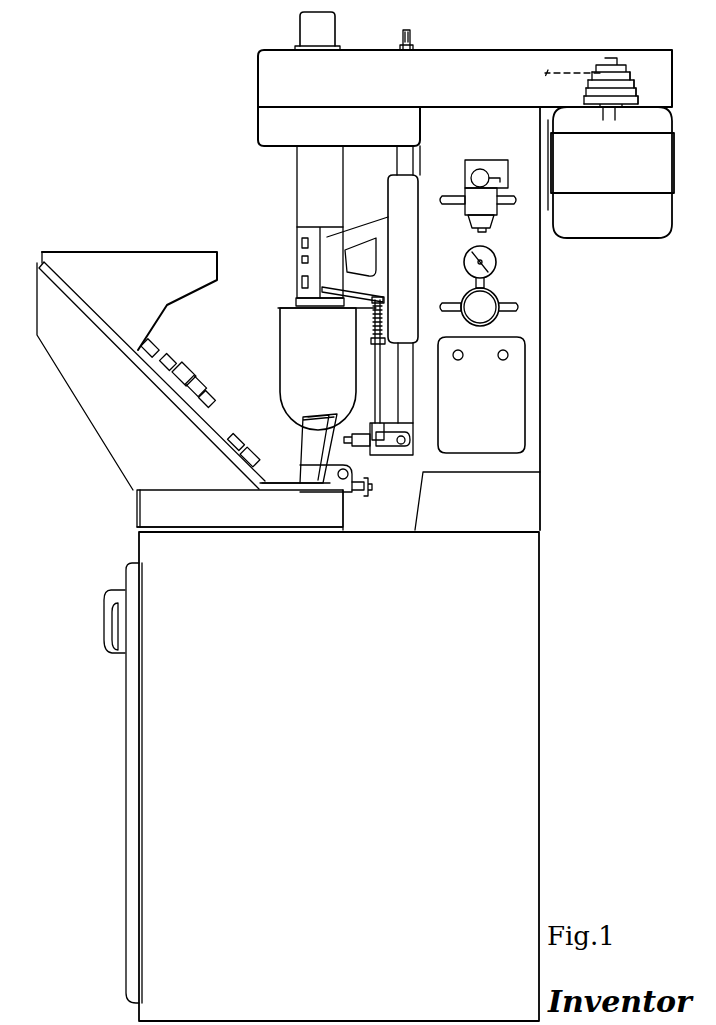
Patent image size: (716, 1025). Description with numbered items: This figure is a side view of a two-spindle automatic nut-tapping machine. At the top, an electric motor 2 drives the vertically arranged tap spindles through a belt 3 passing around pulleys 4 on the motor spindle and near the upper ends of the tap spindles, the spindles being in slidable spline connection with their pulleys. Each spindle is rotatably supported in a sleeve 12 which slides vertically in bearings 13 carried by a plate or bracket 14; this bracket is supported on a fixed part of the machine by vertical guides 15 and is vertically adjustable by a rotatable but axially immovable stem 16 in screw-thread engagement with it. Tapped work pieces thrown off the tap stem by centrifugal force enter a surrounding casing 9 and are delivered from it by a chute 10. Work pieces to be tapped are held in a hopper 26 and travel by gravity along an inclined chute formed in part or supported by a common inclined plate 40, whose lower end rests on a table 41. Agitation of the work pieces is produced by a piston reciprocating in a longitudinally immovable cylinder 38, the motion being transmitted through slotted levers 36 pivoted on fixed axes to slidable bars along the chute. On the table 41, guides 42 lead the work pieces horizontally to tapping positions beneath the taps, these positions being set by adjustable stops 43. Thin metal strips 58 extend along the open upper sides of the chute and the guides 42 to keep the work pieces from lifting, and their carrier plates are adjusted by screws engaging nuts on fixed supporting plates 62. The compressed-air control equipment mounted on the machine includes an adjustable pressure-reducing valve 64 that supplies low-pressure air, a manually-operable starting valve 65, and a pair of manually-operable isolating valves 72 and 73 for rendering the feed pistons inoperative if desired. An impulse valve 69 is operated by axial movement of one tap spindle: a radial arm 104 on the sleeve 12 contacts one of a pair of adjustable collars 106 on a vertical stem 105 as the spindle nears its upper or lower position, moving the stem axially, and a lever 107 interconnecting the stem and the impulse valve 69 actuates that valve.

The electric motor 2 is at (662, 158).
The belt 3 is at (565, 86).
The pulleys 4 is at (628, 68).
The casing 9 is at (282, 355).
The chute 10 is at (304, 450).
The sleeve 12 is at (296, 303).
The bearings 13 is at (301, 268).
The plate or bracket 14 is at (412, 232).
The vertical guides 15 is at (407, 395).
The stem 16 is at (413, 40).
The hopper 26 is at (175, 258).
The slotted levers 36 is at (206, 396).
The cylinder 38 is at (158, 346).
The inclined plate 40 is at (172, 385).
The table 41 is at (150, 506).
The guides 42 is at (280, 492).
The adjustable stops 43 is at (366, 492).
The thin metal strips 58 is at (278, 474).
The fixed supporting plates 62 is at (244, 441).
The pressure-reducing valve 64 is at (486, 302).
The starting valve 65 is at (476, 200).
The impulse valve 69 is at (408, 456).
The isolating valve 72 is at (463, 360).
The isolating valve 73 is at (508, 357).
The radial arm 104 is at (355, 308).
The vertical stem 105 is at (382, 320).
The adjustable collars 106 is at (384, 300).
The lever 107 is at (382, 445).